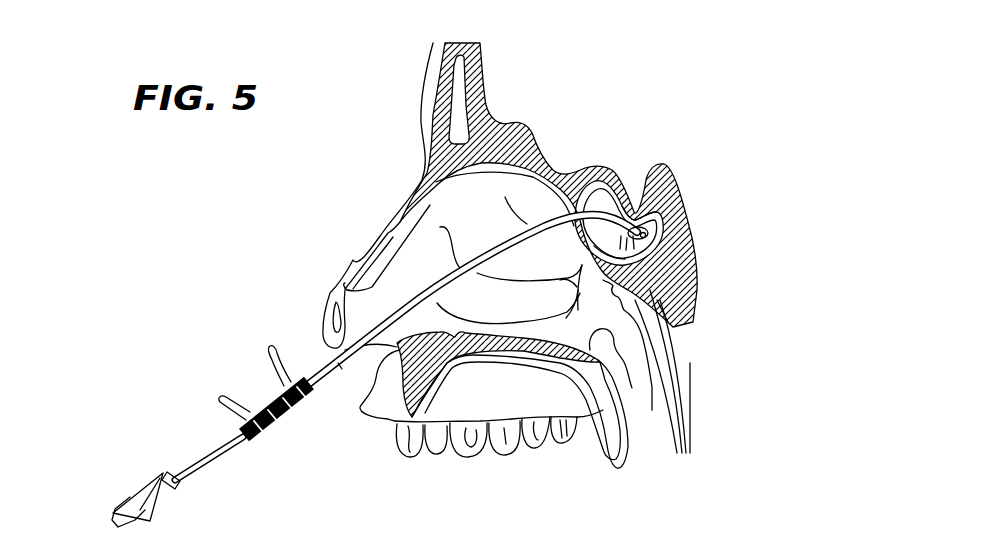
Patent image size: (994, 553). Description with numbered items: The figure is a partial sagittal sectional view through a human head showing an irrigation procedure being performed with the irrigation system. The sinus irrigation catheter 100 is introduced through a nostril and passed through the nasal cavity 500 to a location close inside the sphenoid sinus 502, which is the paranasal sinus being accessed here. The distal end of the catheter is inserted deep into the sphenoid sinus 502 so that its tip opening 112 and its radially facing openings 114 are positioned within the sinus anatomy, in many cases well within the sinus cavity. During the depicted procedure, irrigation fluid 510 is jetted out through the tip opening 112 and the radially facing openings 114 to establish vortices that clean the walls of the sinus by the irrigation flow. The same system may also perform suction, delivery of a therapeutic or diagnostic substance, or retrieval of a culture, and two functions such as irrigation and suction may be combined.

The sinus irrigation catheter 100 is at (449, 371).
The tip opening 112 is at (648, 236).
The radially facing openings 114 is at (636, 214).
The nasal cavity 500 is at (437, 212).
The sphenoid sinus 502 is at (658, 232).
The irrigation fluid 510 is at (655, 245).